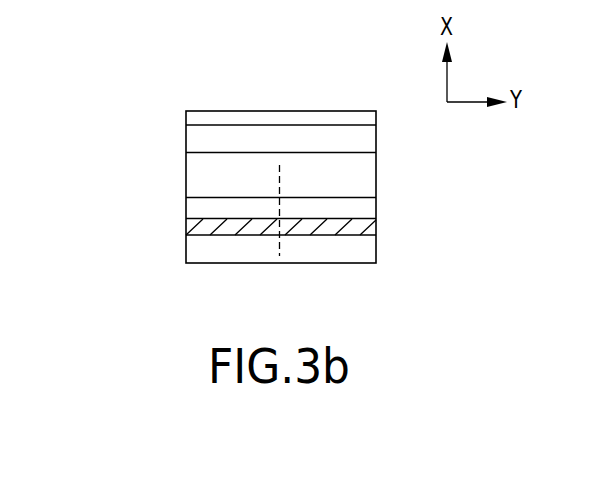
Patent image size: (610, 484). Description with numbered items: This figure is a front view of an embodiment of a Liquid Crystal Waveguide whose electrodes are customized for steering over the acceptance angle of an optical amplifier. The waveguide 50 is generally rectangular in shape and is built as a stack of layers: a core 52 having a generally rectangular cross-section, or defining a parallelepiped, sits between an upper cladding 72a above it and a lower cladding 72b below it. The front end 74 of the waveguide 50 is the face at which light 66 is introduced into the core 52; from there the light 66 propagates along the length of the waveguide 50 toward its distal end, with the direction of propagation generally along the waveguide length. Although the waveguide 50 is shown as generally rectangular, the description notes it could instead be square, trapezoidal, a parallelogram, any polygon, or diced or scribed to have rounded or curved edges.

The waveguide 50 is at (123, 138).
The front end 74 is at (202, 119).
The upper cladding 72a is at (367, 137).
The core 52 is at (355, 173).
The lower cladding 72b is at (355, 204).
The light 66 is at (276, 230).